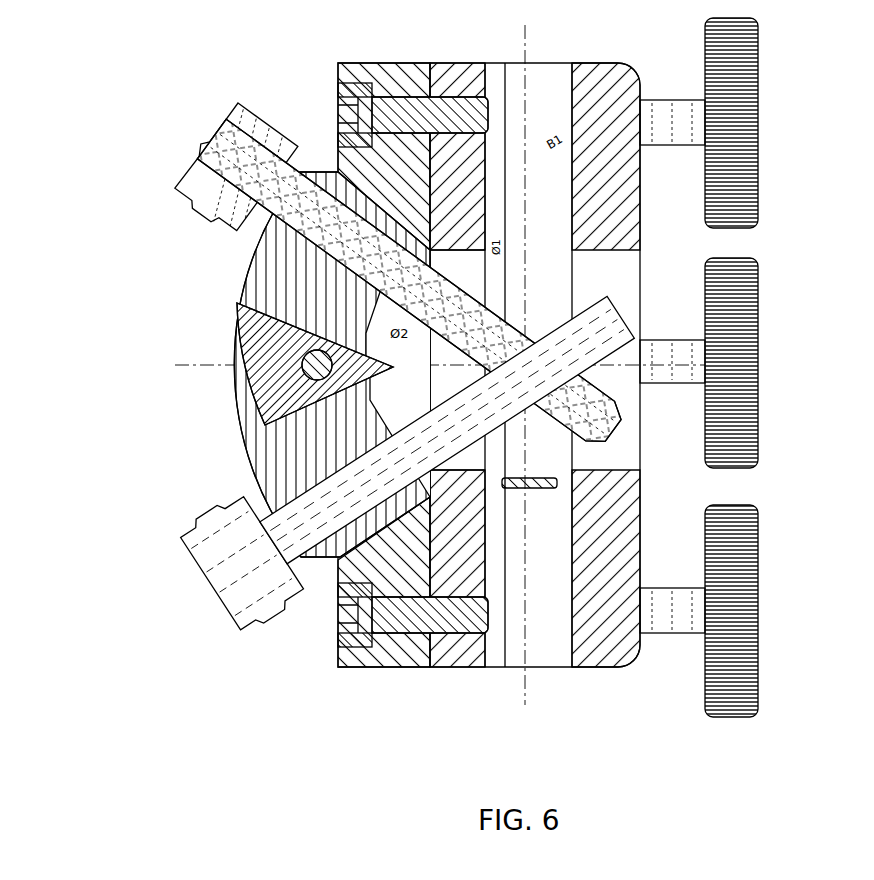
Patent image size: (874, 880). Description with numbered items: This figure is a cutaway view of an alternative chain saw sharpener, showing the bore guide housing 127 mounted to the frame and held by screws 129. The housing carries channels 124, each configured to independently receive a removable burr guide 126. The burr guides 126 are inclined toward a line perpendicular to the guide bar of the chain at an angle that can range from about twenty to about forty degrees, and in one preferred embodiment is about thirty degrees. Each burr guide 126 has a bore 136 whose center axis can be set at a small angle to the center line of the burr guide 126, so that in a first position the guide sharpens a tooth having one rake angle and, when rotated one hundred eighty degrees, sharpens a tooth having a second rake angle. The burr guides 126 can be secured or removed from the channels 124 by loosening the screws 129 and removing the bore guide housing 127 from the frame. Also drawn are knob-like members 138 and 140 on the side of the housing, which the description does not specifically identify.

The channel 124 is at (322, 172).
The burr guide 126 is at (332, 364).
The bore guide housing 127 is at (226, 332).
The screw 129 is at (336, 88).
The bore 136 is at (257, 266).
The adjustment knob 138 is at (765, 350).
The knob 140 is at (763, 117).